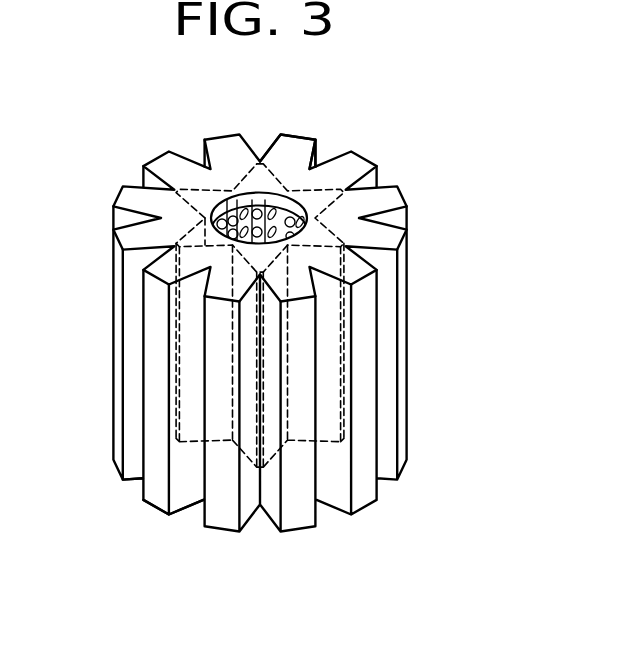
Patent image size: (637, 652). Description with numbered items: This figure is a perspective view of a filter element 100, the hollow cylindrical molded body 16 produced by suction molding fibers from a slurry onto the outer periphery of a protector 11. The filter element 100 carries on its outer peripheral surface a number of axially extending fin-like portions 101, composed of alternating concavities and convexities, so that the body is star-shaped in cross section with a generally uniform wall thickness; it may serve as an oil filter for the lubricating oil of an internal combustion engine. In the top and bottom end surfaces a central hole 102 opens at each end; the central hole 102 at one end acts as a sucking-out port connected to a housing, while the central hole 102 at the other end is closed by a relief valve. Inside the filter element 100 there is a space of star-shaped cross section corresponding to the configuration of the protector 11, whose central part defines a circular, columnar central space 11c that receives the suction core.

The filter element 100 is at (412, 209).
The fin-like portions 101 is at (317, 152).
The central hole 102 is at (210, 203).
The protector 11 is at (178, 380).
The central space 11c is at (260, 208).
The molded body 16 is at (153, 503).